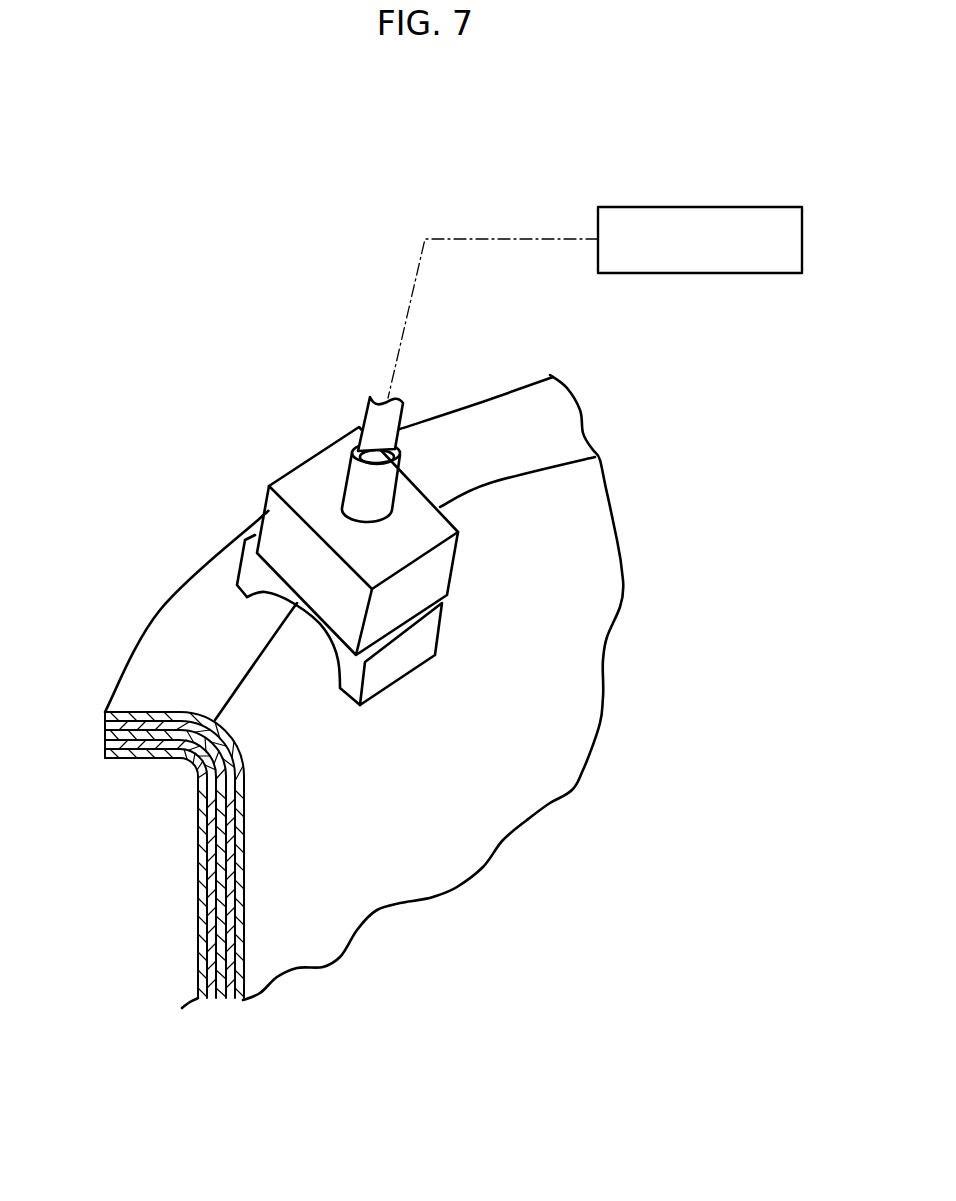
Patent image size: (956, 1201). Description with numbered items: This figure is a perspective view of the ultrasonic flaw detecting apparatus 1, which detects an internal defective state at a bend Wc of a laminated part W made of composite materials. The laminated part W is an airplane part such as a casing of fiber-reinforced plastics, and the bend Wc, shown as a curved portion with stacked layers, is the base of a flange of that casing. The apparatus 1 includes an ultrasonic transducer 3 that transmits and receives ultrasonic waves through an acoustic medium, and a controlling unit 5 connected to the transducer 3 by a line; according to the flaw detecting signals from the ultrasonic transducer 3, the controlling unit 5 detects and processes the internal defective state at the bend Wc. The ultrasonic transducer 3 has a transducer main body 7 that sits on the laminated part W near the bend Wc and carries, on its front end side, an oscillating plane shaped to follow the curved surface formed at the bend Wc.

The ultrasonic flaw detecting apparatus 1 is at (402, 403).
The ultrasonic transducer 3 is at (326, 428).
The controlling unit 5 is at (719, 204).
The transducer main body 7 is at (247, 572).
The laminated part W is at (160, 607).
The bend Wc is at (187, 768).